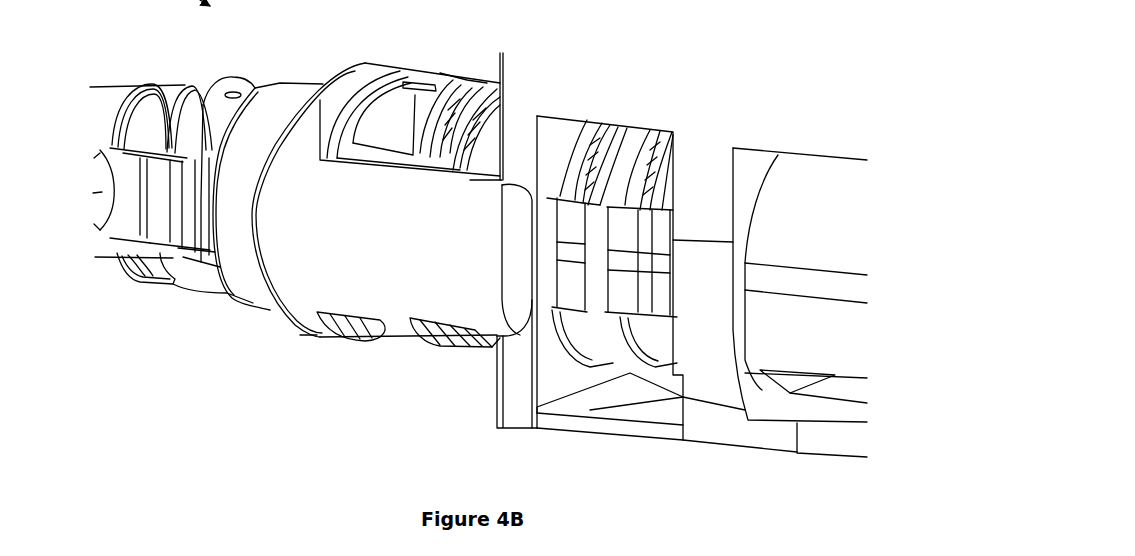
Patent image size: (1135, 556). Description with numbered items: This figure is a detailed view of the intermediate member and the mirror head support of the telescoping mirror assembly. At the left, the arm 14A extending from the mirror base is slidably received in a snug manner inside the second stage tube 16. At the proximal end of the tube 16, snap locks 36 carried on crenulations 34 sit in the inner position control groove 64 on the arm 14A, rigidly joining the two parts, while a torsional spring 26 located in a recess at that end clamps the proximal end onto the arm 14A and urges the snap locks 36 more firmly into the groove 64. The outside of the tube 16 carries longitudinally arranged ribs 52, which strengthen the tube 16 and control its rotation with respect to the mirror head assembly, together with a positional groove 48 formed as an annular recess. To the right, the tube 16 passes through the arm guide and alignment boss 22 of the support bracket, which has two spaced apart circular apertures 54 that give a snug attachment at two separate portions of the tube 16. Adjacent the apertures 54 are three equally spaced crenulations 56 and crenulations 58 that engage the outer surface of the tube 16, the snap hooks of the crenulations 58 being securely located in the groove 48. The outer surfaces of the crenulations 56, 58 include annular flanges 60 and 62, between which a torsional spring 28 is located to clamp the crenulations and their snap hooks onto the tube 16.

The arm 14A is at (115, 231).
The inner position control groove 64 is at (133, 176).
The crenulations 34 is at (155, 88).
The torsional spring 26 is at (245, 70).
The snap locks 36 is at (142, 232).
The second stage tube 16 is at (237, 272).
The crenulations 56 is at (413, 85).
The annular flange 60 is at (447, 85).
The annular flange 62 is at (497, 108).
The torsional spring 28 is at (493, 85).
The circular apertures 54 is at (358, 353).
The arm guide and alignment boss 22 is at (455, 385).
The crenulations 58 is at (665, 140).
The positional groove 48 is at (655, 302).
The ribs 52 is at (797, 275).